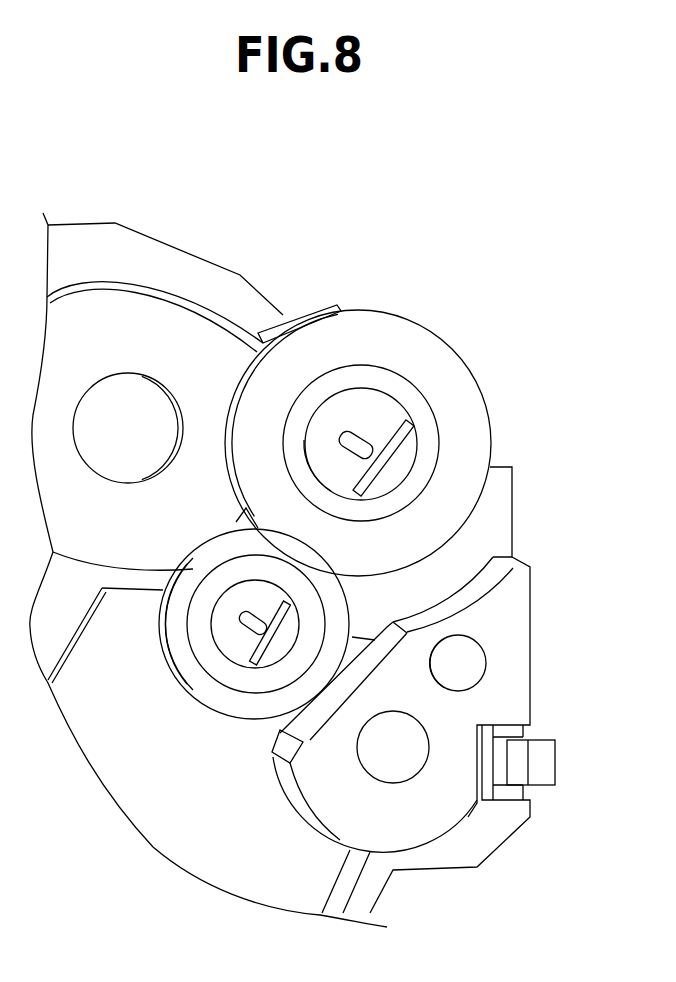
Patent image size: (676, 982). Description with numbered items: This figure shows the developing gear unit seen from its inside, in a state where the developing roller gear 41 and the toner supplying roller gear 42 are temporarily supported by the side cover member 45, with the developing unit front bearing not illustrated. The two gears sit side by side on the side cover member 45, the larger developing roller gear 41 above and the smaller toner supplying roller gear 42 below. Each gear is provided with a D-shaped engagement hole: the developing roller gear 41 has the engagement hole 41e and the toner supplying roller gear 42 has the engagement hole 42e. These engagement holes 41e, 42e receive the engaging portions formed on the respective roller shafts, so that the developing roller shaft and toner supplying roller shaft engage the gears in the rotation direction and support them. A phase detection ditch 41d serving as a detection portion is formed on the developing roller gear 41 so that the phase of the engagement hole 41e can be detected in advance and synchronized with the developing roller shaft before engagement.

The side cover member 45 is at (117, 242).
The developing roller gear 41 is at (377, 333).
The phase detection ditch 41d is at (353, 442).
The engagement hole 41e is at (400, 432).
The toner supplying roller gear 42 is at (180, 653).
The engagement hole 42e is at (277, 647).